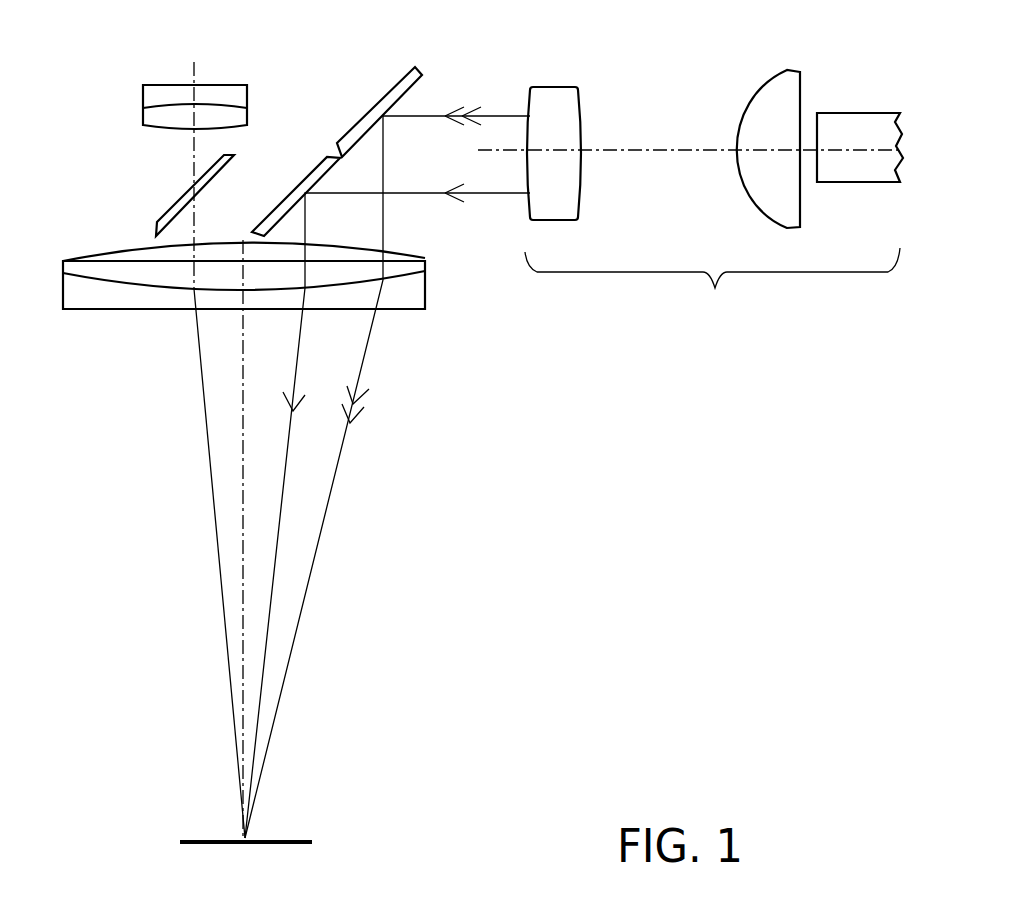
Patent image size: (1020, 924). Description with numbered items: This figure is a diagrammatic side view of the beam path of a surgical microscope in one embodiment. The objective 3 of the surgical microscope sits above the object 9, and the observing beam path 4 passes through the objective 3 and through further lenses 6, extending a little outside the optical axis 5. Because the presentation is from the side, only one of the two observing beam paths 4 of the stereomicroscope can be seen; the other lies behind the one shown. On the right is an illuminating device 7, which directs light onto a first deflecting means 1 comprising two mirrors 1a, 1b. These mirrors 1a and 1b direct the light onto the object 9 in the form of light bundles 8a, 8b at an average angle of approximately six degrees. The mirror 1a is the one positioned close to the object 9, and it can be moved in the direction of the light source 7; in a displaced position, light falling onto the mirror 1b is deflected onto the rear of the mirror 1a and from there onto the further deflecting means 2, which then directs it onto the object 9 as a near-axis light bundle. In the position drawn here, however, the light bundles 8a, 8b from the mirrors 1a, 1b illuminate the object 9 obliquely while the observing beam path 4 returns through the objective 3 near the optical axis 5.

The first deflecting means 1 is at (337, 124).
The mirror 1a is at (287, 198).
The mirror 1b is at (395, 90).
The further deflecting means 2 is at (172, 208).
The objective 3 is at (129, 302).
The observing beam path 4 is at (207, 413).
The optical axis 5 is at (243, 490).
The further lenses 6 is at (143, 118).
The illuminating device 7 is at (690, 196).
The light bundle 8a is at (298, 357).
The light bundle 8b is at (367, 357).
The object 9 is at (288, 838).